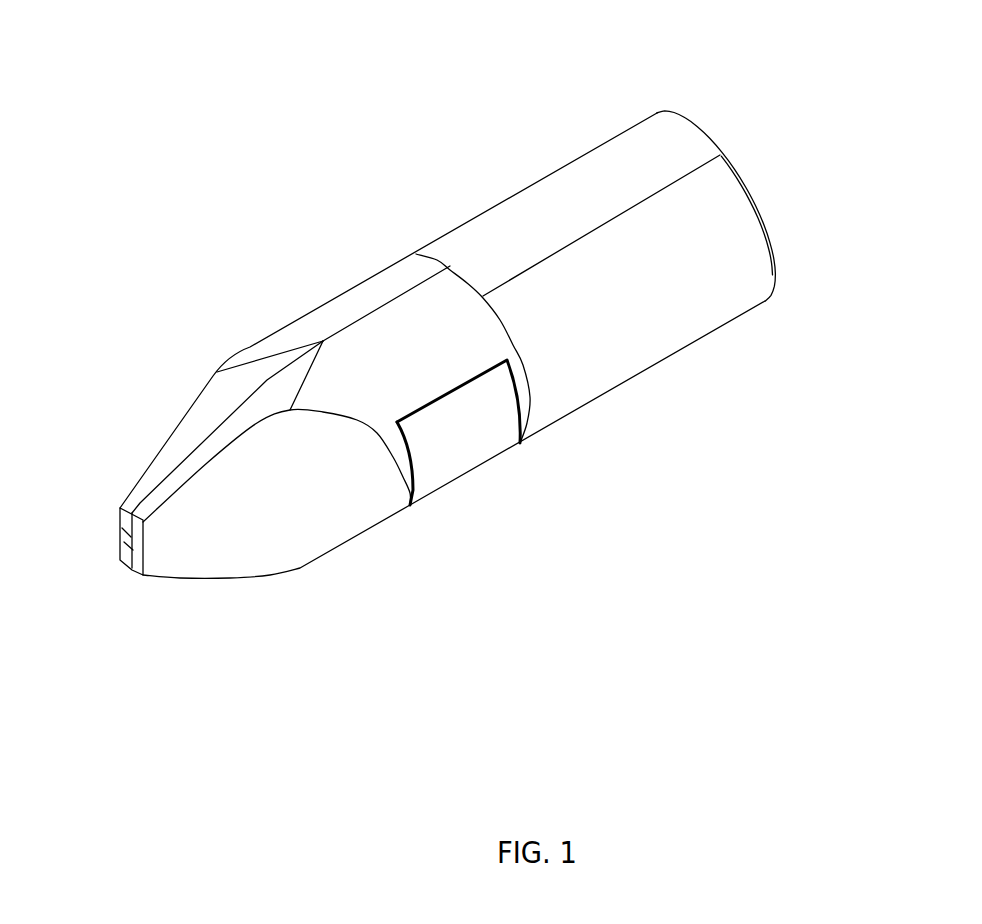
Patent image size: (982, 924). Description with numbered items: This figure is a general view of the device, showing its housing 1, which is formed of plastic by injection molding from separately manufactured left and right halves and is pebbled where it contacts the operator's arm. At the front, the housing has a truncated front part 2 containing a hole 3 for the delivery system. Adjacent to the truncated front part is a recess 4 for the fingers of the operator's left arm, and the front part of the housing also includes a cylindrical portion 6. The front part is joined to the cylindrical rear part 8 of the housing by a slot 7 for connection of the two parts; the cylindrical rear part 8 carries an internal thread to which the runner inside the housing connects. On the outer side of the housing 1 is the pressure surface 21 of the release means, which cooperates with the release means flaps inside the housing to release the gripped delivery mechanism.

The device housing 1 is at (348, 307).
The truncated front part of the housing 2 is at (208, 408).
The hole in the truncated front part of the housing 3 is at (130, 530).
The recess for left arm fingers 4 is at (305, 490).
The cylindrical portion of the front part of the housing 6 is at (470, 323).
The slot for connection of the front part and cylindrical rear part of the housing 7 is at (437, 262).
The cylindrical rear part of the housing 8 is at (560, 190).
The release means pressure surface 21 is at (472, 427).